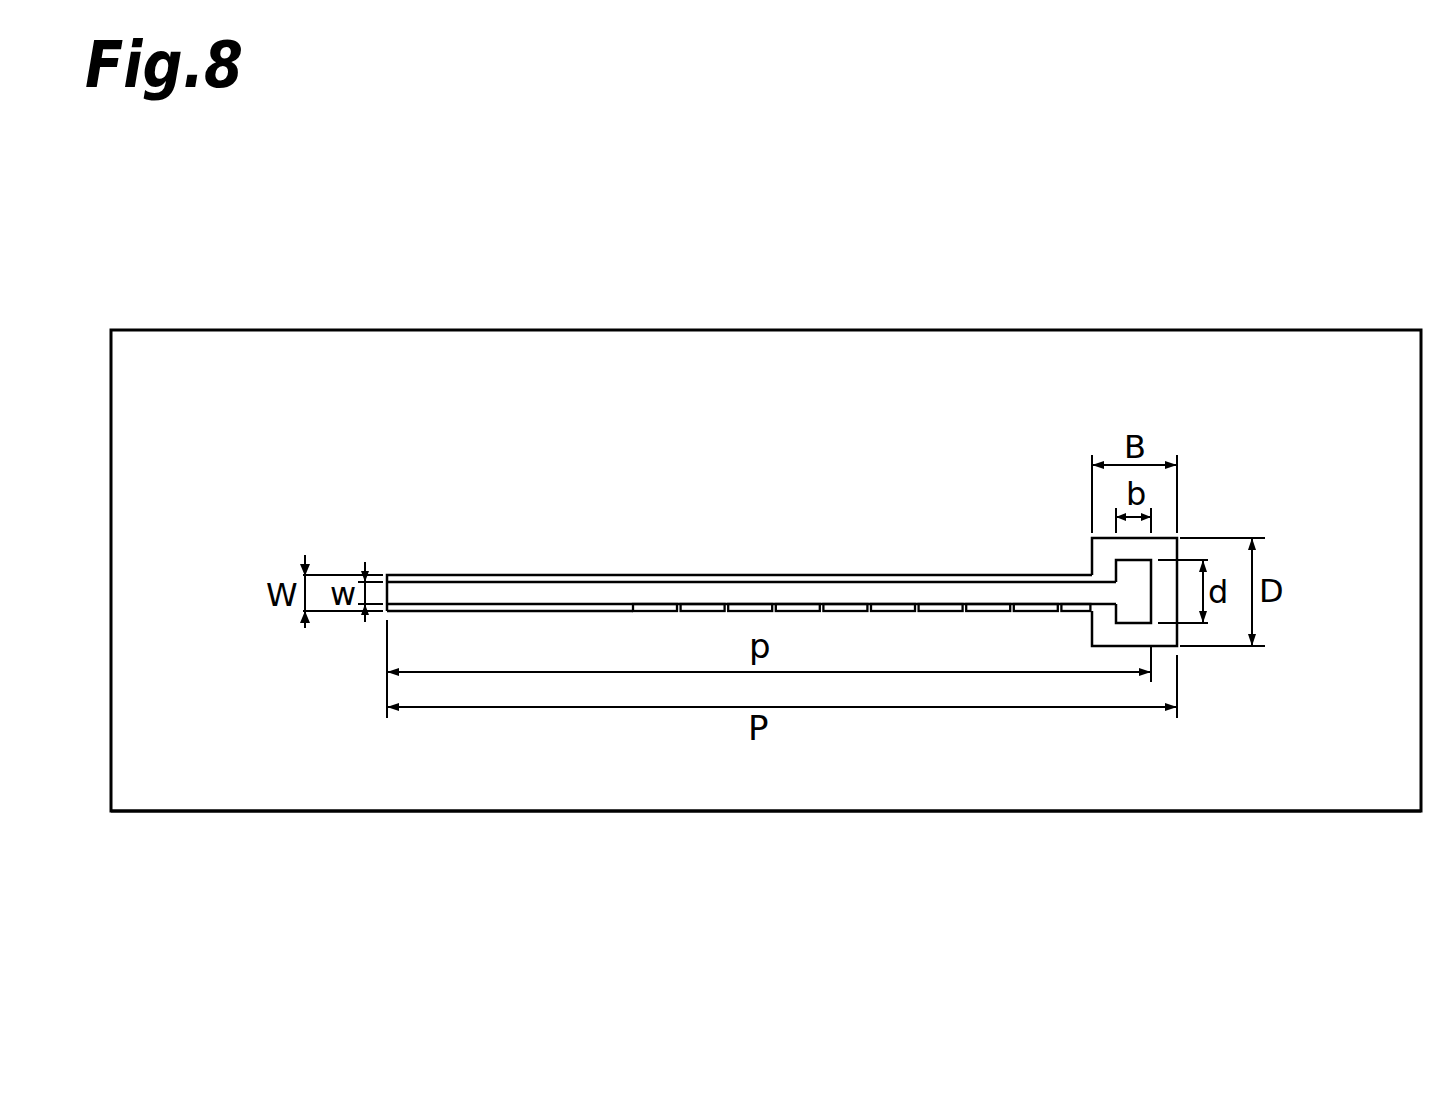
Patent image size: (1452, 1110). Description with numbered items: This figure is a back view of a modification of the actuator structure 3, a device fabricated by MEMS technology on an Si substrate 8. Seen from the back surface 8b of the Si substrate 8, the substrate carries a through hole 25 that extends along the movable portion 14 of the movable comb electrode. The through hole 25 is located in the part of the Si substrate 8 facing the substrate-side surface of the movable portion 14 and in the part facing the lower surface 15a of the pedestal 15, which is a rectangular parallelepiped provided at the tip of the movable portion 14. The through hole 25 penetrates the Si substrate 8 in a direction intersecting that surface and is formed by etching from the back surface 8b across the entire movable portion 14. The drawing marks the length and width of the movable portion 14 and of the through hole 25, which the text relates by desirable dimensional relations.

The actuator structure 3 is at (573, 220).
The Si substrate 8 is at (928, 328).
The back surface 8b is at (518, 782).
The movable portion 14 is at (797, 604).
The lower surface 15a is at (1128, 573).
The pedestal 15 is at (1010, 570).
The through hole 25 is at (1105, 630).